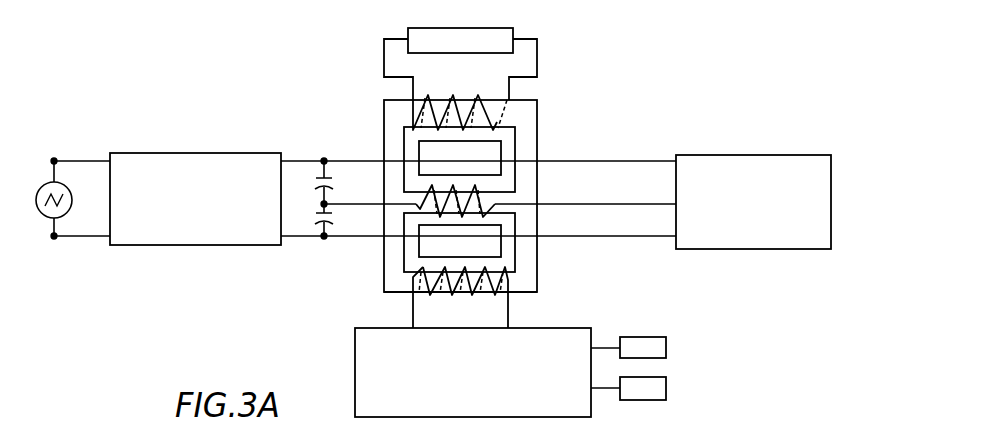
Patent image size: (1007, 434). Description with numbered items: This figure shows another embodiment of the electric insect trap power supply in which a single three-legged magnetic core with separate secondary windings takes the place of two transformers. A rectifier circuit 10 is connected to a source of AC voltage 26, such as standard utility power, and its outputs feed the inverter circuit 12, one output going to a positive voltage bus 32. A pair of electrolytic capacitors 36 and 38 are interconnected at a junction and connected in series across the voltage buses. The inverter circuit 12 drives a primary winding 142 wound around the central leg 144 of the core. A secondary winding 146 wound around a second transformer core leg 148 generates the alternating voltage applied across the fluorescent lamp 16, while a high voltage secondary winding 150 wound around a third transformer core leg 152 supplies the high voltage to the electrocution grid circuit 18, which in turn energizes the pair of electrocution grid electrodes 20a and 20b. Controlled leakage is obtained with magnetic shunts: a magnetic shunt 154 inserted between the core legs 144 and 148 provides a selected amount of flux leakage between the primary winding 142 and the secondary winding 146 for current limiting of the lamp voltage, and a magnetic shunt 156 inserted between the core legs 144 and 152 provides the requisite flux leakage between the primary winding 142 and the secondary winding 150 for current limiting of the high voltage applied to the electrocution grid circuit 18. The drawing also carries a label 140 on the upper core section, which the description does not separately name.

The rectifier circuit 10 is at (205, 153).
The inverter circuit 12 is at (737, 155).
The fluorescent lamp 16 is at (460, 28).
The electrocution grid circuit 18 is at (355, 362).
The electrocution grid electrode 20a is at (633, 337).
The electrocution grid electrode 20b is at (667, 388).
The source of AC voltage 26 is at (48, 178).
The positive voltage bus 32 is at (471, 430).
The electrolytic capacitor 36 is at (330, 186).
The electrolytic capacitor 38 is at (318, 226).
The upper transformer core 140 is at (539, 120).
The primary winding 142 is at (519, 205).
The central leg 144 is at (408, 214).
The secondary winding 146 is at (506, 115).
The second transformer core leg 148 is at (392, 99).
The high voltage secondary winding 150 is at (509, 280).
The third transformer core leg 152 is at (398, 293).
The magnetic shunt 154 is at (501, 150).
The magnetic shunt 156 is at (501, 247).